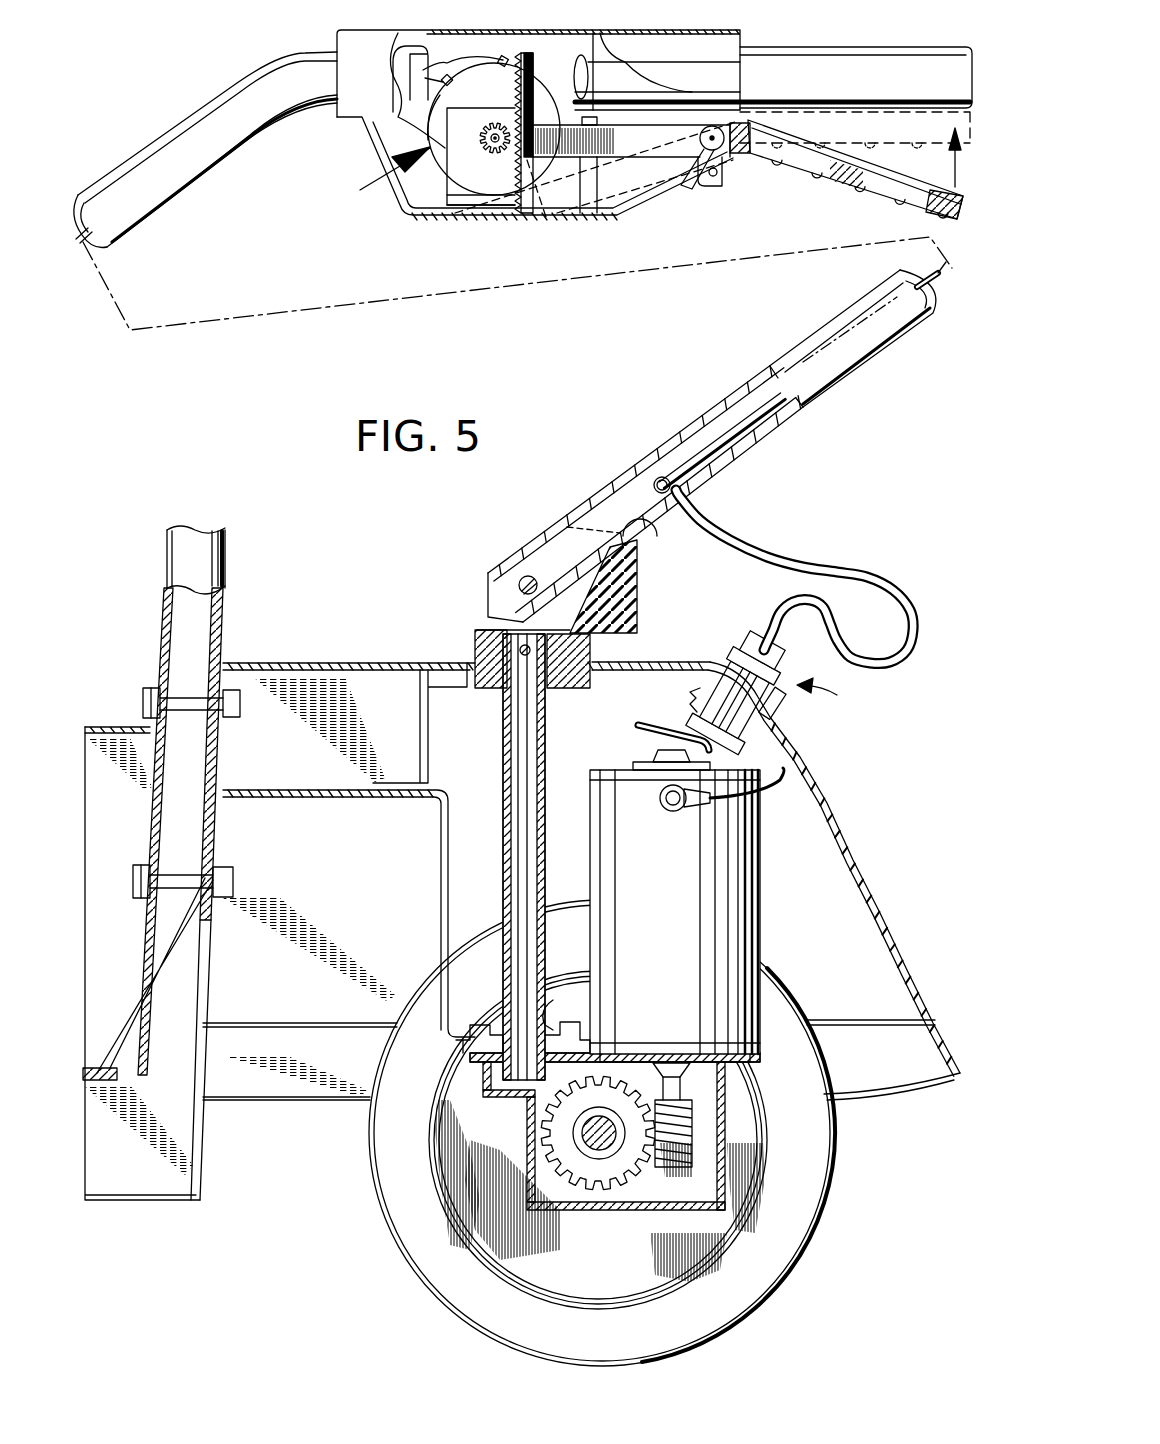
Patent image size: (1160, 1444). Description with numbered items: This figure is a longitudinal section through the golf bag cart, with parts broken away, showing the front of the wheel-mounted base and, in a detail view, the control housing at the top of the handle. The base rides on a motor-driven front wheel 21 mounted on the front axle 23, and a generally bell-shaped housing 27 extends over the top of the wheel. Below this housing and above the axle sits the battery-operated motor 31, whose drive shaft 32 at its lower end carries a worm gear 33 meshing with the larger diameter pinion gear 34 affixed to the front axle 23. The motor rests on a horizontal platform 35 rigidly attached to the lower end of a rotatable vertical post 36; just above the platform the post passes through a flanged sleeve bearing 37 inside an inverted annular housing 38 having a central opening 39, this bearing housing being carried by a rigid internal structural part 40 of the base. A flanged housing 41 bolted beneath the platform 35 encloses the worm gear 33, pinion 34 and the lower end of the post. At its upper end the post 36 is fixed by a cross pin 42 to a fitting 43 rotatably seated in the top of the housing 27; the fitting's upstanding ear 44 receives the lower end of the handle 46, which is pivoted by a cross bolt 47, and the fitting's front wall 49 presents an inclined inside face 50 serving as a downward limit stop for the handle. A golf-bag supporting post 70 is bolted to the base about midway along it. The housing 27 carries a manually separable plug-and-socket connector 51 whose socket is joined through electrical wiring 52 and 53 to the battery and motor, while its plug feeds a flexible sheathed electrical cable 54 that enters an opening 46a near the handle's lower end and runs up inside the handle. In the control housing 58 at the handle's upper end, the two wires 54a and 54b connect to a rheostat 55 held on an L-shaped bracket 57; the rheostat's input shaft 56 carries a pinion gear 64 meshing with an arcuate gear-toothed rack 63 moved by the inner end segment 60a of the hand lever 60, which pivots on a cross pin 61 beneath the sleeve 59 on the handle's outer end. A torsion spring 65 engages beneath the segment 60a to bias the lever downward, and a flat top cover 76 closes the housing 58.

The front wheel 21 is at (796, 1258).
The front axle 23 is at (604, 1128).
The bell-shaped housing 27 is at (642, 661).
The motor 31 is at (671, 891).
The drive shaft 32 is at (682, 1085).
The worm gear 33 is at (690, 1140).
The pinion gear 34 is at (627, 1172).
The horizontal platform 35 is at (760, 1060).
The rotatable vertical post 36 is at (504, 862).
The flanged sleeve bearing 37 is at (478, 1053).
The annular housing 38 is at (553, 1037).
The central opening 39 is at (547, 1028).
The internal structural part 40 is at (443, 893).
The flanged housing 41 is at (527, 1136).
The cross pin 42 is at (523, 645).
The fitting 43 is at (475, 648).
The upstanding ear 44 is at (523, 572).
The handle 46 is at (632, 478).
The opening 46a is at (663, 477).
The cross bolt 47 is at (526, 577).
The front wall 49 is at (637, 593).
The inside face 50 is at (657, 523).
The plug-and-socket connector 51 is at (777, 693).
The electrical wiring 52 is at (662, 725).
The electrical wiring 53 is at (782, 798).
The electrical cable 54 is at (830, 563).
The wire 54a is at (447, 62).
The wire 54b is at (430, 147).
The rheostat 55 is at (383, 152).
The input shaft 56 is at (479, 138).
The L-shaped bracket 57 is at (473, 197).
The housing 58 is at (403, 193).
The sleeve 59 is at (840, 47).
The lever 60 is at (890, 147).
The inner end segment 60a is at (613, 140).
The cross pin 61 is at (713, 153).
The gear-toothed rack 63 is at (527, 52).
The pinion gear 64 is at (494, 134).
The torsion spring 65 is at (713, 173).
The golf-bag supporting post 70 is at (165, 633).
The top cover 76 is at (555, 33).